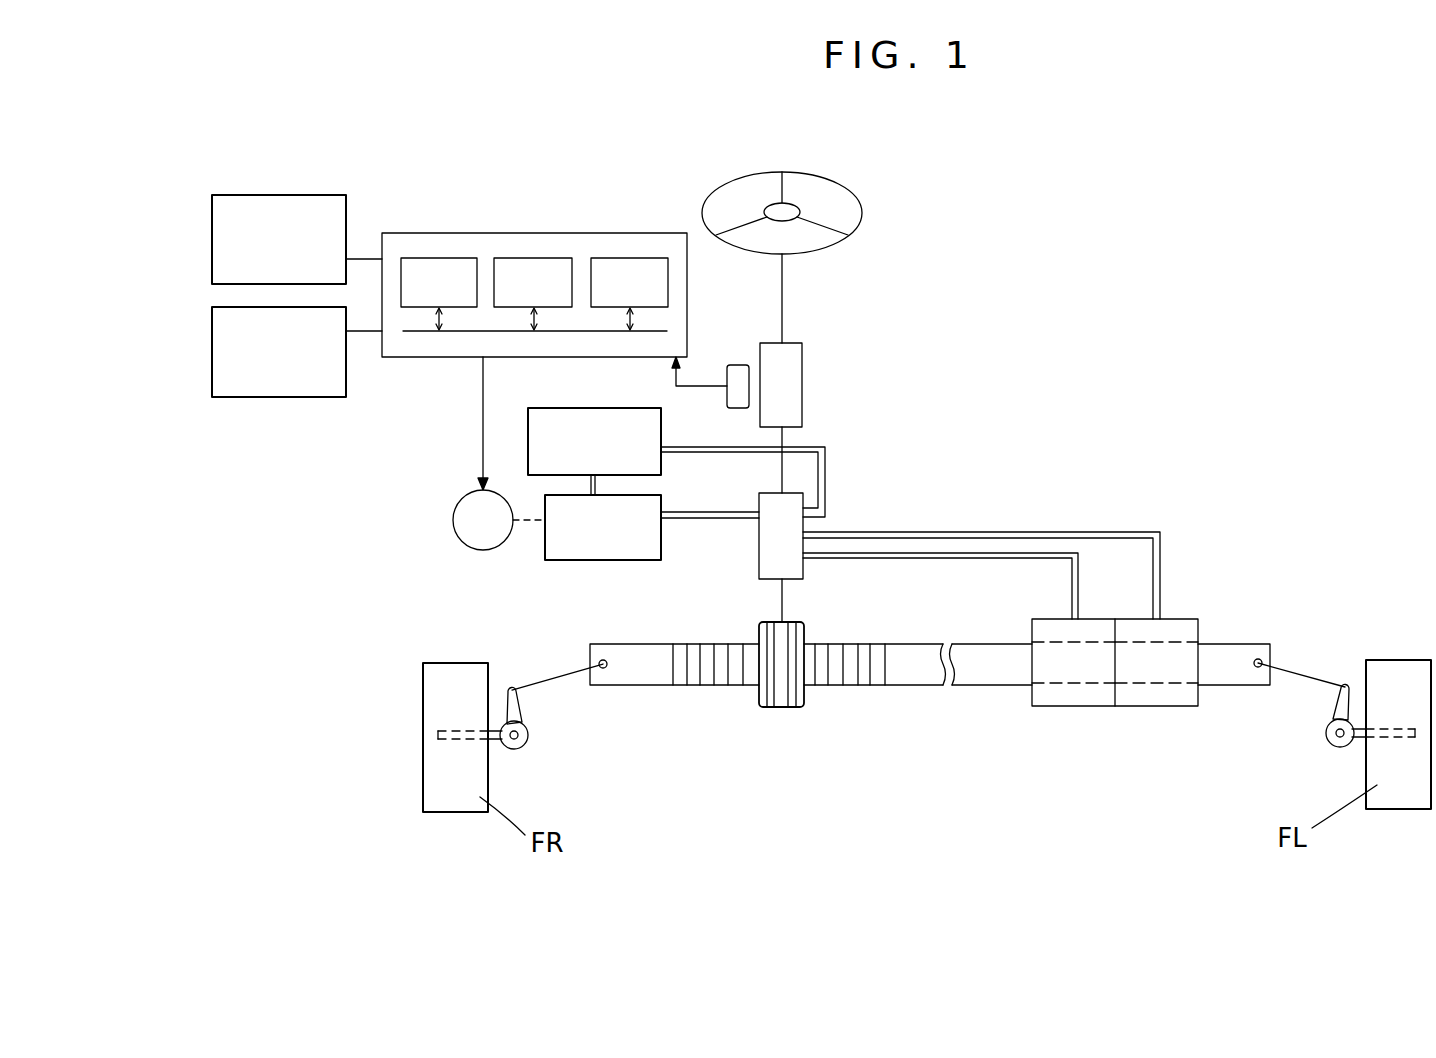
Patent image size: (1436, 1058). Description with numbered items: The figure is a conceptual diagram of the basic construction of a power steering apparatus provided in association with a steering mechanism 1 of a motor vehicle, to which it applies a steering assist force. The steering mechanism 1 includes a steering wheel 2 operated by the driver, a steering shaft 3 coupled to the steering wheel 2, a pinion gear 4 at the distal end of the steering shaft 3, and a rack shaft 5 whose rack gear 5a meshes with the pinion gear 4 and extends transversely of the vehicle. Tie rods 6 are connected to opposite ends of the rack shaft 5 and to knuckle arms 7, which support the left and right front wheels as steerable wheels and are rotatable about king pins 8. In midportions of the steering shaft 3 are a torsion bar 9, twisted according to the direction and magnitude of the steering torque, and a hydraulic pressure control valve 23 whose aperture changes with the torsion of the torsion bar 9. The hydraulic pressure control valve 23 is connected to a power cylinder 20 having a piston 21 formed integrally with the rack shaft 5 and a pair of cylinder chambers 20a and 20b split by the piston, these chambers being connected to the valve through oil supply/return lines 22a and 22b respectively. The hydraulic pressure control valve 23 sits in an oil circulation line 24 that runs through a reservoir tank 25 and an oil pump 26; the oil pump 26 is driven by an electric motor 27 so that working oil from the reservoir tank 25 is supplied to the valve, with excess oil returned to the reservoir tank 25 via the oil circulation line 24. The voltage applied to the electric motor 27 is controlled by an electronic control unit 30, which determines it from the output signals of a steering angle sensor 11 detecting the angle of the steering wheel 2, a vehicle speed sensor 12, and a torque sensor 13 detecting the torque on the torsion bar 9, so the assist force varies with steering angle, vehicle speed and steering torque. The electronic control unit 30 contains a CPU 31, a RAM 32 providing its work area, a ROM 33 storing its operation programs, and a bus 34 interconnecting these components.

The steering mechanism 1 is at (890, 358).
The steering wheel 2 is at (822, 178).
The steering shaft 3 is at (785, 320).
The pinion gear 4 is at (775, 707).
The rack shaft 5 is at (918, 670).
The rack gear 5a is at (728, 675).
The tie rods 6 is at (553, 681).
The knuckle arms 7 is at (530, 738).
The king pins 8 is at (518, 742).
The torsion bar 9 is at (793, 394).
The steering angle sensor 11 is at (282, 195).
The vehicle speed sensor 12 is at (283, 397).
The torque sensor 13 is at (740, 370).
The power cylinder 20 is at (1185, 619).
The cylinder chamber 20a is at (1083, 695).
The cylinder chamber 20b is at (1168, 695).
The piston 21 is at (1115, 692).
The oil supply/return line 22a is at (1000, 555).
The oil supply/return line 22b is at (1025, 532).
The hydraulic pressure control valve 23 is at (767, 545).
The oil circulation line 24 is at (828, 482).
The reservoir tank 25 is at (578, 408).
The oil pump 26 is at (584, 560).
The electric motor 27 is at (455, 530).
The electronic control unit 30 is at (655, 233).
The CPU 31 is at (441, 258).
The RAM 32 is at (625, 258).
The ROM 33 is at (545, 258).
The bus 34 is at (470, 331).